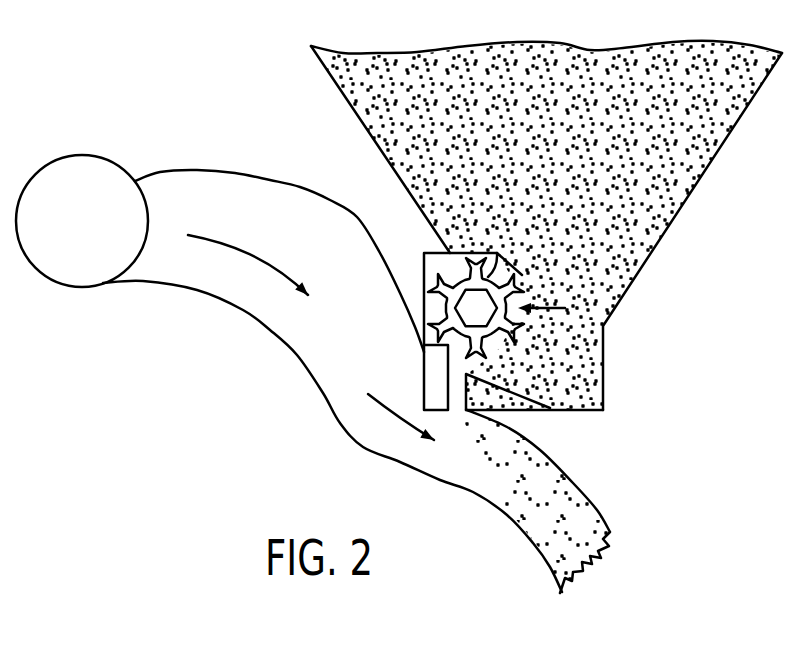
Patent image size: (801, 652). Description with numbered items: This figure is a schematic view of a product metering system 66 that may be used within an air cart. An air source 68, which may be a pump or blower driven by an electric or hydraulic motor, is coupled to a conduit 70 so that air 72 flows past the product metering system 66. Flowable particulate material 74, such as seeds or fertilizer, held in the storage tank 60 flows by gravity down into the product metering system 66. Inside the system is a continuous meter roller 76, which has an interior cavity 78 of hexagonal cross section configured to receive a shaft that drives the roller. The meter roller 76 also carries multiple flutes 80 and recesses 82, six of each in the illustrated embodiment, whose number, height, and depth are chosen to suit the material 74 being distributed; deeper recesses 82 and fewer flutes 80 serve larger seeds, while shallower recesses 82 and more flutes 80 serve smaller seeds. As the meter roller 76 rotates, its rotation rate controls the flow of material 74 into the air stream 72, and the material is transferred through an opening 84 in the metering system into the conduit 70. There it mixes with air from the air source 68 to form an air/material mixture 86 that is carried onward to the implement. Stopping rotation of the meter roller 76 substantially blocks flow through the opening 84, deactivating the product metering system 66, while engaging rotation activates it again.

The storage tank 60 is at (338, 84).
The product metering system 66 is at (410, 247).
The air source 68 is at (80, 155).
The conduit 70 is at (296, 353).
The air 72 is at (253, 251).
The flowable particulate material 74 is at (708, 146).
The meter roller 76 is at (553, 308).
The interior cavity 78 is at (461, 311).
The flutes 80 is at (443, 283).
The recesses 82 is at (497, 253).
The opening 84 is at (463, 385).
The air/material mixture 86 is at (517, 506).